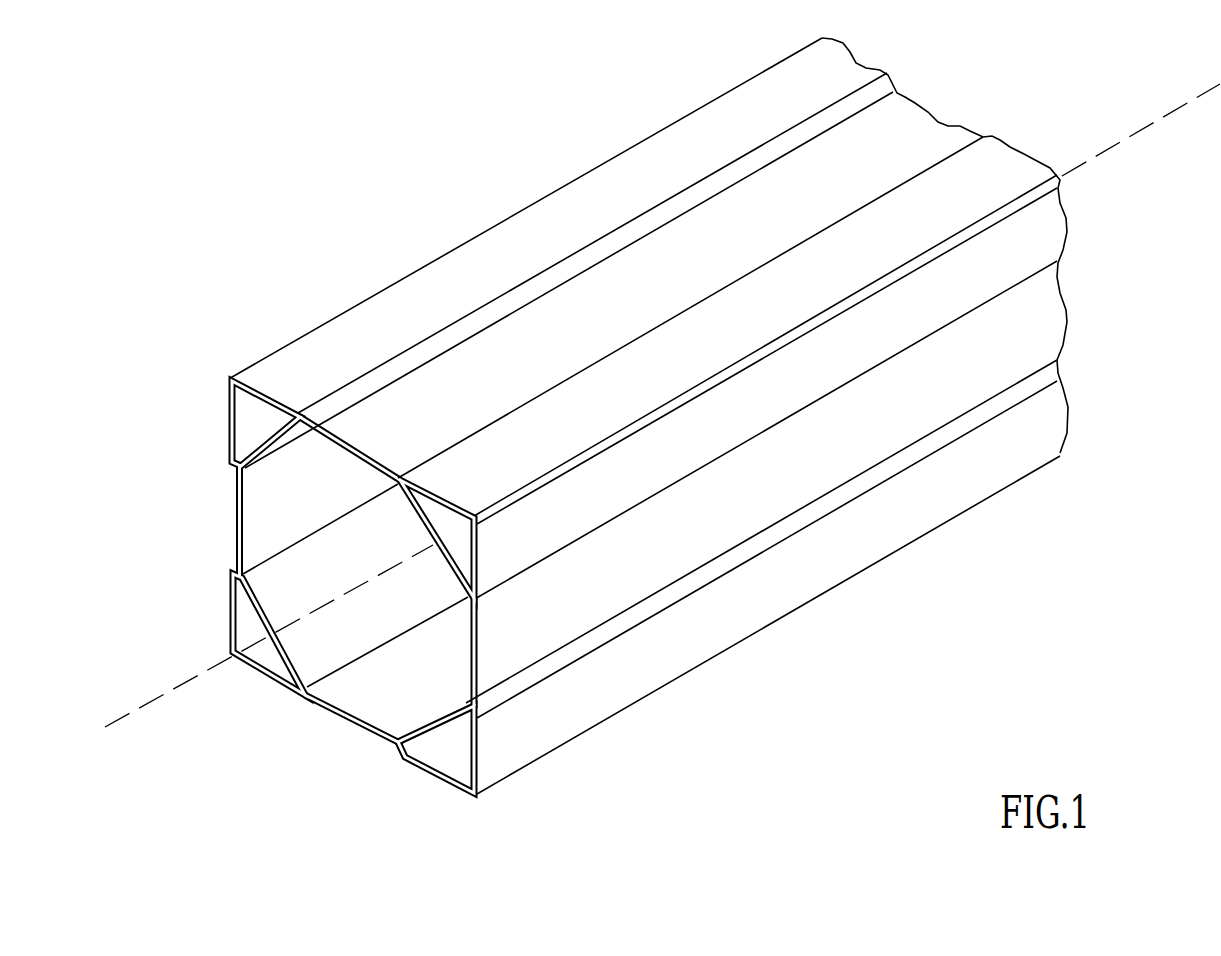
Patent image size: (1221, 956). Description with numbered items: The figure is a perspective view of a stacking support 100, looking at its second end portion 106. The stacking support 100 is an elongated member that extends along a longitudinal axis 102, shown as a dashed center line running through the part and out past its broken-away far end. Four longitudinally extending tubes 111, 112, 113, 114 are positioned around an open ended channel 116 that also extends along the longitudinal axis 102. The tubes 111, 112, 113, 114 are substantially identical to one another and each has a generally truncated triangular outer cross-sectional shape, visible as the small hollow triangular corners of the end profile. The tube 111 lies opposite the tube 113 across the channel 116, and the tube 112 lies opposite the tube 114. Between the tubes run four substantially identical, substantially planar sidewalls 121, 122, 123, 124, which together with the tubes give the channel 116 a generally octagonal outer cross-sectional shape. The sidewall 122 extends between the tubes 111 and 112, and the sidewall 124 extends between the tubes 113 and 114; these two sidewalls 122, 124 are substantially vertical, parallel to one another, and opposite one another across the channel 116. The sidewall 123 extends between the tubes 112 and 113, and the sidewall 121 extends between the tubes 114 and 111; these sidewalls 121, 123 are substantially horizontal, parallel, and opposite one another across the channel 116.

The stacking support 100 is at (333, 135).
The longitudinal axis 102 is at (1138, 130).
The second end portion 106 is at (238, 482).
The tube 111 is at (255, 420).
The tube 112 is at (250, 618).
The tube 113 is at (455, 757).
The tube 114 is at (458, 540).
The open ended channel 116 is at (403, 693).
The sidewall 121 is at (445, 388).
The sidewall 122 is at (235, 542).
The sidewall 123 is at (332, 712).
The sidewall 124 is at (602, 577).